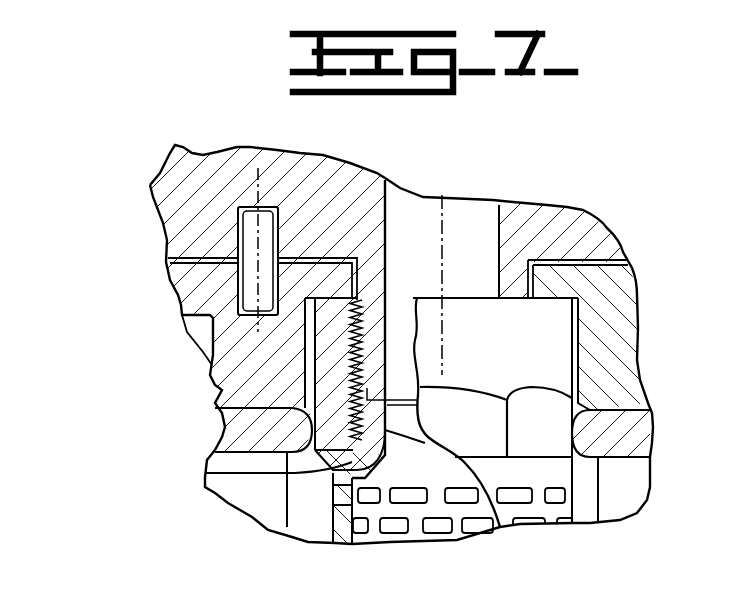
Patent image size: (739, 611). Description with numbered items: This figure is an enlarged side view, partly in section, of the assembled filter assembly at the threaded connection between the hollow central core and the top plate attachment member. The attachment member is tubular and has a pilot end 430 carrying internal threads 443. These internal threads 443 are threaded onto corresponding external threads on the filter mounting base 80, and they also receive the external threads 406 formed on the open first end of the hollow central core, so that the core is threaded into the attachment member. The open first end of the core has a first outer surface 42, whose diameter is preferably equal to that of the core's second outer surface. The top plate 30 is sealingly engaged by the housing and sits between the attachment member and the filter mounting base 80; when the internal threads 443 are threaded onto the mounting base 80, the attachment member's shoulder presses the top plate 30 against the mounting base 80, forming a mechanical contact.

The top plate 30 is at (188, 283).
The filter mounting base 80 is at (378, 277).
The pilot end 430 is at (335, 327).
The internal threads 443 is at (428, 430).
The external threads 406 is at (205, 473).
The first outer surface 42 is at (333, 518).